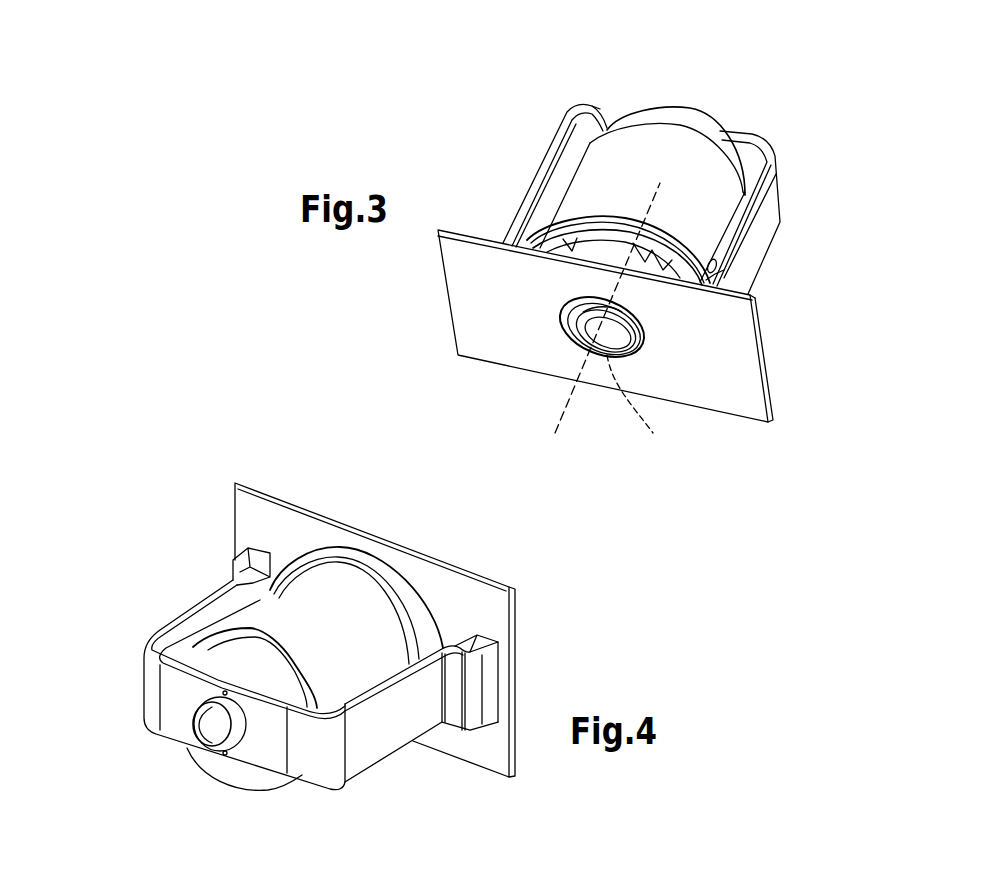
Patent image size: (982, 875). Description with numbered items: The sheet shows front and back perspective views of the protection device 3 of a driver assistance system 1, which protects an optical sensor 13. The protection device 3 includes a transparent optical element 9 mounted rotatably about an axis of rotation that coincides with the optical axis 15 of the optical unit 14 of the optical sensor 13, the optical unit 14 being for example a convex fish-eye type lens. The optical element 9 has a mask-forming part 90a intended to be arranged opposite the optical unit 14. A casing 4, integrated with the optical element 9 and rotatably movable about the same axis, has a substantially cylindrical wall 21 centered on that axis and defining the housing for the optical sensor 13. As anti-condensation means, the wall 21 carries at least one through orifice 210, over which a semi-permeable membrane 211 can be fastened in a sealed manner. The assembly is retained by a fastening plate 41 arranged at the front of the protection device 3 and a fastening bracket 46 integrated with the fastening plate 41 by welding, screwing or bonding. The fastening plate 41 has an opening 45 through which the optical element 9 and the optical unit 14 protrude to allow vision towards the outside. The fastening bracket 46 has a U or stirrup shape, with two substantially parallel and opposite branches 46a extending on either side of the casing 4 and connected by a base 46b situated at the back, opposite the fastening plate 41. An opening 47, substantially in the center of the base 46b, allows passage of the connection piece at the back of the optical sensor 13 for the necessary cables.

In FIG. 3, the driver assistance system 1 is at (806, 122).
In FIG. 4, the driver assistance system 1 is at (355, 462).
In FIG. 3, the protection device 3 is at (802, 177).
In FIG. 4, the protection device 3 is at (265, 470).
In FIG. 3, the casing 4 is at (677, 97).
In FIG. 4, the casing 4 is at (263, 600).
In FIG. 3, the optical element 9 is at (583, 335).
In FIG. 3, the optical sensor 13 is at (600, 249).
In FIG. 3, the optical unit 14 is at (636, 412).
In FIG. 3, the optical axis 15 is at (653, 230).
In FIG. 3, the wall 21 is at (702, 172).
In FIG. 4, the wall 21 is at (343, 597).
In FIG. 3, the fastening plate 41 is at (747, 387).
In FIG. 4, the fastening plate 41 is at (487, 608).
In FIG. 3, the opening 45 is at (580, 326).
In FIG. 3, the fastening bracket 46 is at (762, 227).
In FIG. 4, the fastening bracket 46 is at (143, 673).
In FIG. 3, the branches 46a is at (527, 192).
In FIG. 4, the branches 46a is at (182, 610).
In FIG. 3, the base 46b is at (610, 106).
In FIG. 4, the base 46b is at (257, 750).
In FIG. 4, the opening 47 is at (212, 725).
In FIG. 3, the mask-forming part 90a is at (602, 343).
In FIG. 3, the through orifice 210 is at (716, 272).
In FIG. 3, the semi-permeable membrane 211 is at (727, 270).